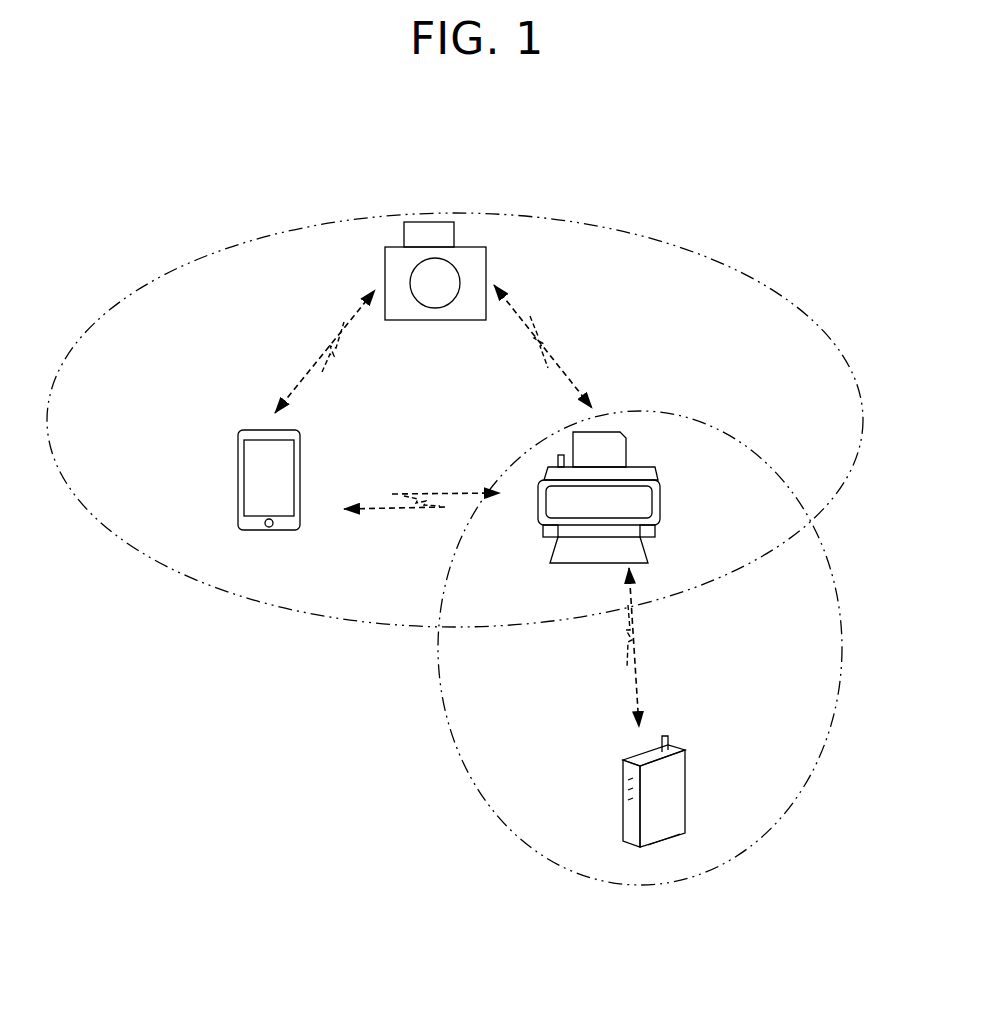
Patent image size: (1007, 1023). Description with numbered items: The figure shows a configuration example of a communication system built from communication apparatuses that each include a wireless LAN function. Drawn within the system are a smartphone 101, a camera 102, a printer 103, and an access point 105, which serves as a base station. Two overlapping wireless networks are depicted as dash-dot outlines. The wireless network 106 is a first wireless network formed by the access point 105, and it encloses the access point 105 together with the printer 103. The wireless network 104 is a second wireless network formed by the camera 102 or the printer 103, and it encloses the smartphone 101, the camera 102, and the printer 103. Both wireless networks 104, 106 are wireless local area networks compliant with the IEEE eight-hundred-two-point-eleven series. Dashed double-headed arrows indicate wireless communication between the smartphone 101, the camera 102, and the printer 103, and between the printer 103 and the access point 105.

The smartphone 101 is at (237, 458).
The camera 102 is at (486, 260).
The printer 103 is at (640, 462).
The wireless network 104 is at (862, 440).
The access point 105 is at (622, 798).
The wireless network 106 is at (446, 723).